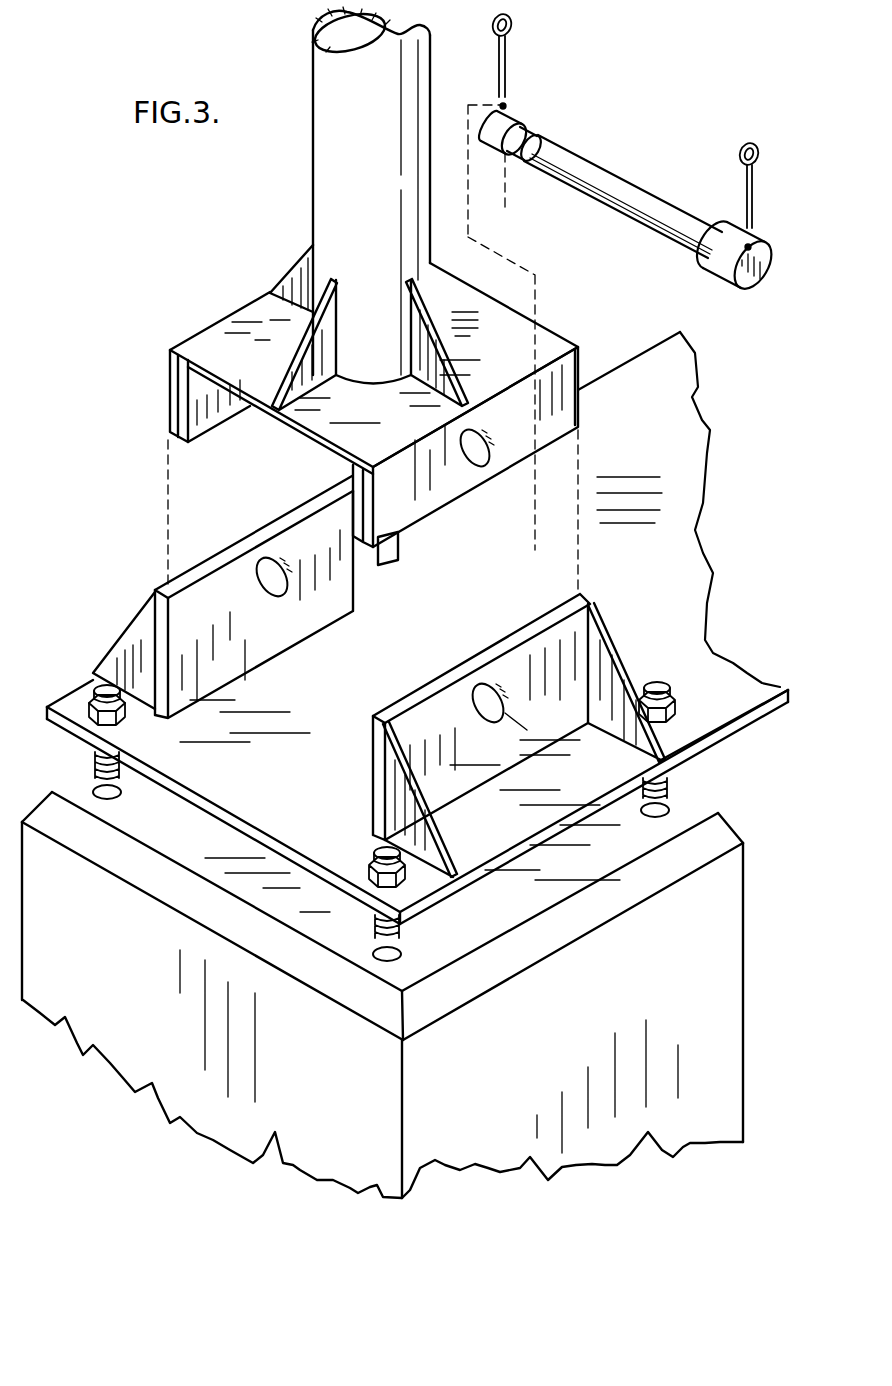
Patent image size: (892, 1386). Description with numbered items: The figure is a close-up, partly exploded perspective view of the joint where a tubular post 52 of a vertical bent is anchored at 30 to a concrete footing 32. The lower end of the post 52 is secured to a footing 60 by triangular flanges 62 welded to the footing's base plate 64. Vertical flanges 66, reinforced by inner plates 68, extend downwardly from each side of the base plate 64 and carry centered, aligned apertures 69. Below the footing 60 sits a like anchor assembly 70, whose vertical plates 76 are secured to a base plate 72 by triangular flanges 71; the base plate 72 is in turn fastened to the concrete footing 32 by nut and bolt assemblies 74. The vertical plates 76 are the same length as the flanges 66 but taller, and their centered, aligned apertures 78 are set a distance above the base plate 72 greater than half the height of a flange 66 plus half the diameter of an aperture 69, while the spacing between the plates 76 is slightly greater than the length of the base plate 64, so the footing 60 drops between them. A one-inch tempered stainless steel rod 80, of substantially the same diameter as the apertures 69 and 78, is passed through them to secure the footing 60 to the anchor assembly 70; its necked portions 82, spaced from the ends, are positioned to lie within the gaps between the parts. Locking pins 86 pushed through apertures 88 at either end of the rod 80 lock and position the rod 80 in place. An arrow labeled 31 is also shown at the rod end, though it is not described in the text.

The anchoring location 30 is at (742, 806).
The pin insertion direction 31 is at (773, 260).
The concrete footing 32 is at (712, 978).
The tubular post 52 is at (324, 166).
The footing 60 is at (211, 305).
The triangular flange 62 is at (300, 358).
The base plate 64 is at (388, 426).
The vertical flange 66 is at (168, 385).
The inner plate 68 is at (212, 428).
The aperture 69 is at (480, 463).
The anchor assembly 70 is at (152, 578).
The triangular flange 71 is at (137, 640).
The base plate 72 is at (328, 722).
The nut and bolt assembly 74 is at (126, 718).
The vertical plate 76 is at (372, 658).
The aperture 78 is at (283, 585).
The rod 80 is at (637, 149).
The necked portion 82 is at (538, 119).
The locking pin 86 is at (510, 18).
The aperture 88 is at (506, 105).